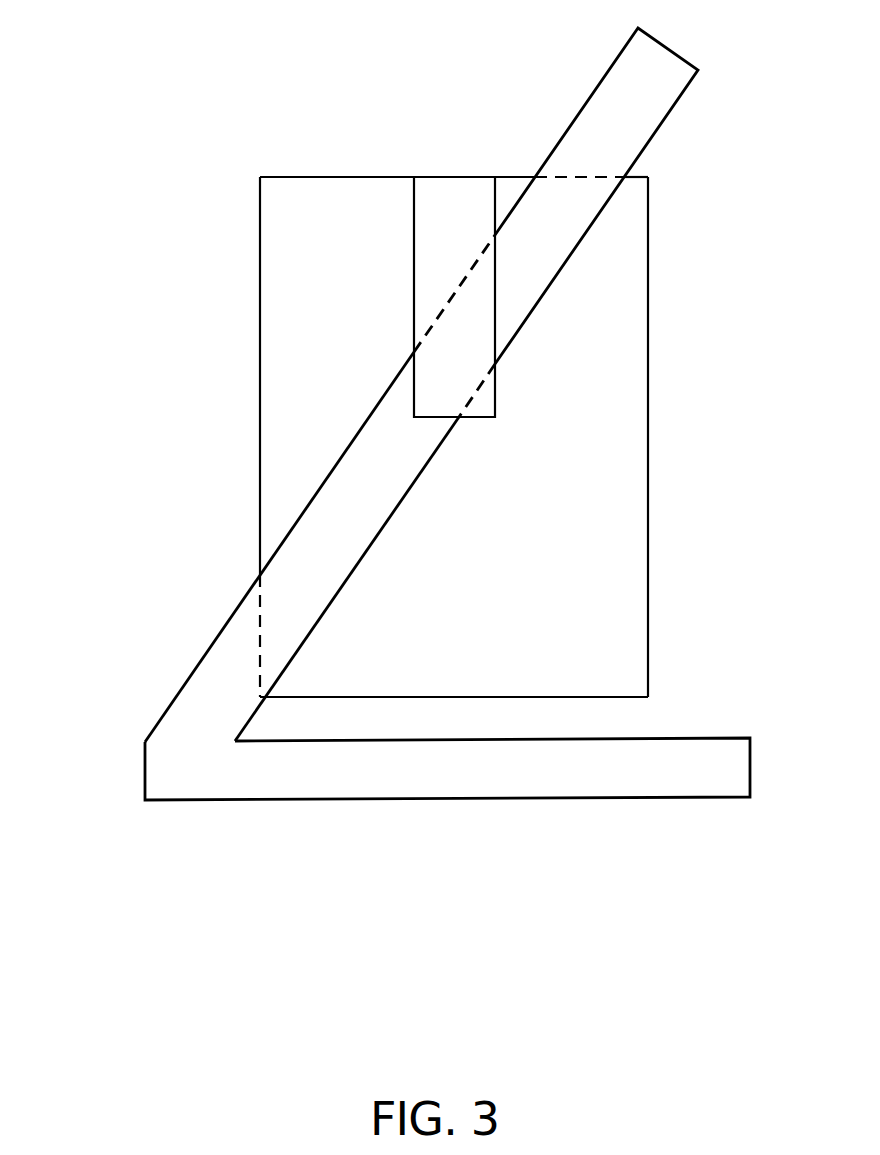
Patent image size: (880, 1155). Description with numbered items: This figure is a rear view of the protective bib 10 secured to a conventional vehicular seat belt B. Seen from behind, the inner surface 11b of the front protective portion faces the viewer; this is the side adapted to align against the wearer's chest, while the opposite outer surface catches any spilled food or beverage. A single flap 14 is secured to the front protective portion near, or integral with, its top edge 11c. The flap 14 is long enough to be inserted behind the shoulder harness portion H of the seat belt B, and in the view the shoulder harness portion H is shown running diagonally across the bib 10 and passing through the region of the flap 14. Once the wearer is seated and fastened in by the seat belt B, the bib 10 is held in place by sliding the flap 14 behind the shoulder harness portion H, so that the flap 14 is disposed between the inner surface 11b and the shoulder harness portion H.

The bib 10 is at (180, 405).
The inner surface 11b is at (605, 542).
The top edge 11c is at (317, 177).
The flap 14 is at (472, 215).
The shoulder harness portion H is at (633, 105).
The seat belt B is at (430, 833).